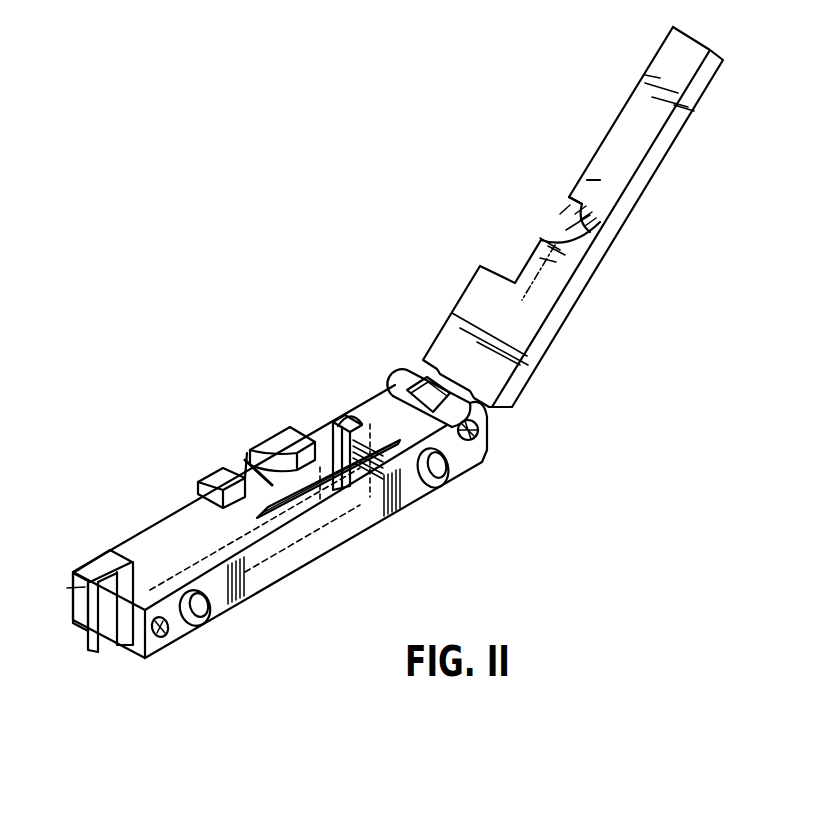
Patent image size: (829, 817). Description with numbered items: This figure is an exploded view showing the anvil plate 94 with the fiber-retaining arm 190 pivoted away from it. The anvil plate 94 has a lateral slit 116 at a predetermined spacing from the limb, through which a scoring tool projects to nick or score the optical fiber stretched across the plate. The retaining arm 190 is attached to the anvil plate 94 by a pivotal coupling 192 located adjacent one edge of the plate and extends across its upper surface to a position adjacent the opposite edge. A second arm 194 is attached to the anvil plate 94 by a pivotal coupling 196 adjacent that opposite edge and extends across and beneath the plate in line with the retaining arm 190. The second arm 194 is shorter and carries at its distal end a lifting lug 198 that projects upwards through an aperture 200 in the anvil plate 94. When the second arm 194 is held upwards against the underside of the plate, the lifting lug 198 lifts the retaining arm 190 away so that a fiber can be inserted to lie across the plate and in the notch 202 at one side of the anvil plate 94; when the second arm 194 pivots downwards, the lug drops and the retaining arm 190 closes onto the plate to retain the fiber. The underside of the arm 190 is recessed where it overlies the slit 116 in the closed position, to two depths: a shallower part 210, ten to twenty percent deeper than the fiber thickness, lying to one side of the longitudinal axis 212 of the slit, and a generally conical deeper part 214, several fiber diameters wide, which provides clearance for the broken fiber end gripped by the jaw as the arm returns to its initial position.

The anvil plate 94 is at (370, 522).
The lateral slit 116 is at (298, 507).
The fiber-retaining arm 190 is at (628, 100).
The pivotal coupling 192 is at (486, 432).
The second arm 194 is at (103, 652).
The pivotal coupling 196 is at (77, 585).
The lifting lug 198 is at (348, 415).
The aperture 200 is at (363, 425).
The notch 202 is at (252, 450).
The shallower part of the recess 210 is at (584, 264).
The longitudinal axis of the slit 212 is at (600, 178).
The deeper part of the recess 214 is at (578, 213).